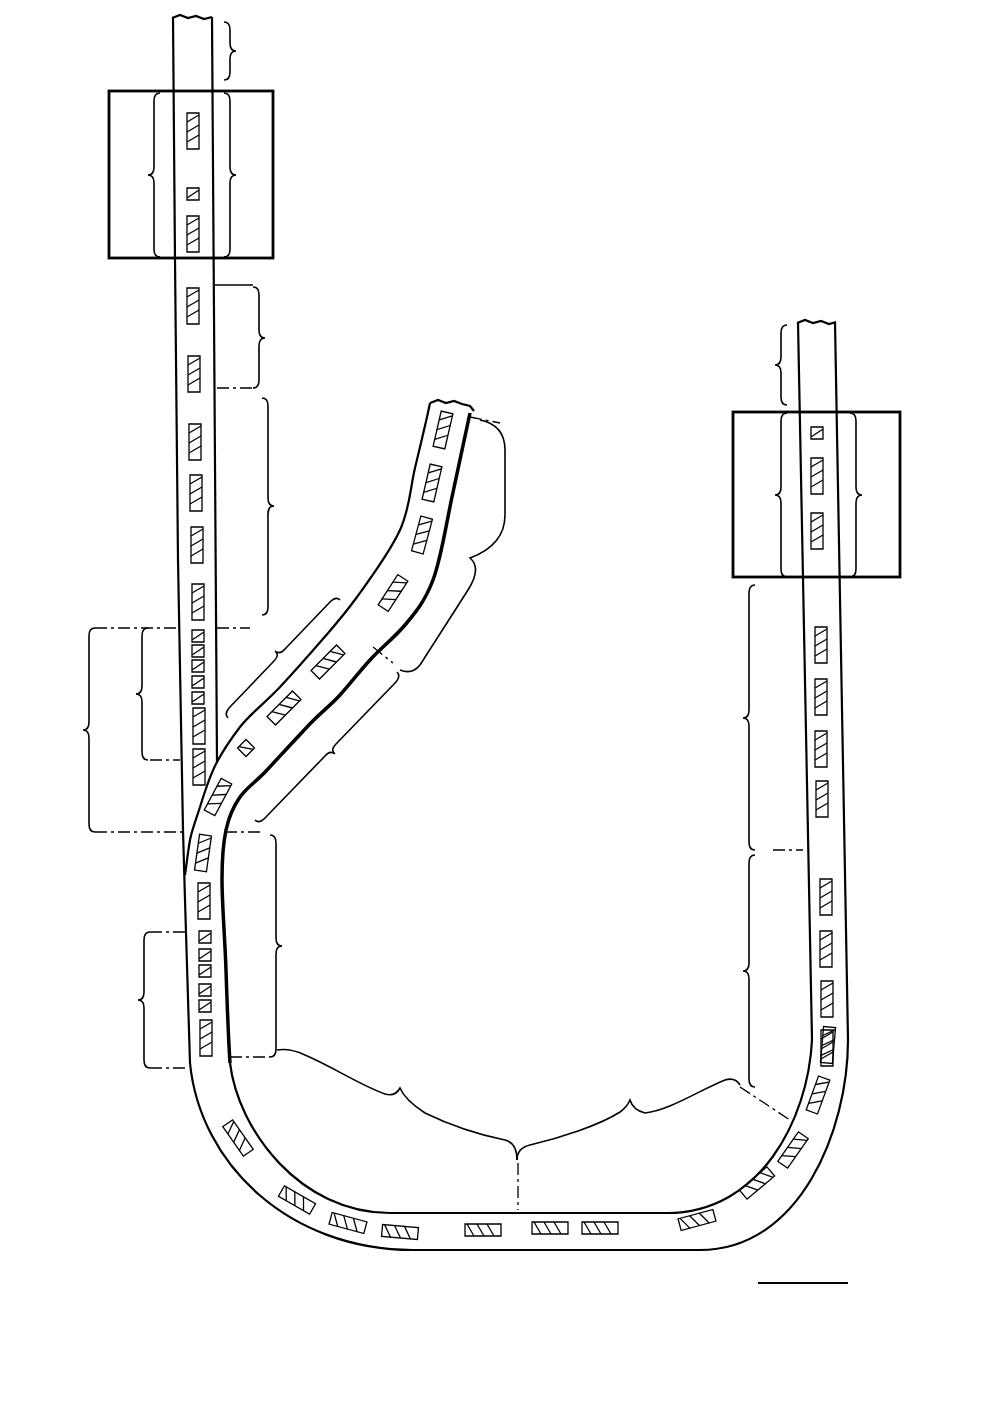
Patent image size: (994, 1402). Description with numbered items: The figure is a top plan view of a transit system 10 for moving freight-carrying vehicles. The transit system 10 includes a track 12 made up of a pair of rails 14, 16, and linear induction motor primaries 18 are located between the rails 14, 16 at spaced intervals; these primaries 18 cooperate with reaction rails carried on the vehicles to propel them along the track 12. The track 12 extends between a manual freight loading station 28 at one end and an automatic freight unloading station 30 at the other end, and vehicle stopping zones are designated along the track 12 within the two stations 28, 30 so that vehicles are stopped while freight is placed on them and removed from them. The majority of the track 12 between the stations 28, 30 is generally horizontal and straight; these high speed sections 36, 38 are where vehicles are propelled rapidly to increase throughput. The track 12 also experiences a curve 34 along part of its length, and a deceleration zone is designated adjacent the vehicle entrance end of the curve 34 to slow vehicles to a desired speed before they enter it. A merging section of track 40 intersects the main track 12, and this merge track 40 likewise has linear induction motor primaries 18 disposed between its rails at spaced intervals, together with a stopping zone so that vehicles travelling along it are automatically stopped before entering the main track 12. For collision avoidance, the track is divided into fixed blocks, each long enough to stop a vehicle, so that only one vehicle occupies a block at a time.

The transit system 10 is at (617, 322).
The track 12 is at (474, 645).
The rail 14 is at (173, 325).
The rail 16 is at (258, 285).
The linear induction motor primaries 18 is at (200, 442).
The manual freight loading station 28 is at (283, 193).
The automatic freight unloading station 30 is at (728, 528).
The curve 34 is at (273, 1226).
The high speed track section 36 is at (330, 488).
The high speed track section 38 is at (731, 807).
The merging section of track 40 is at (400, 455).